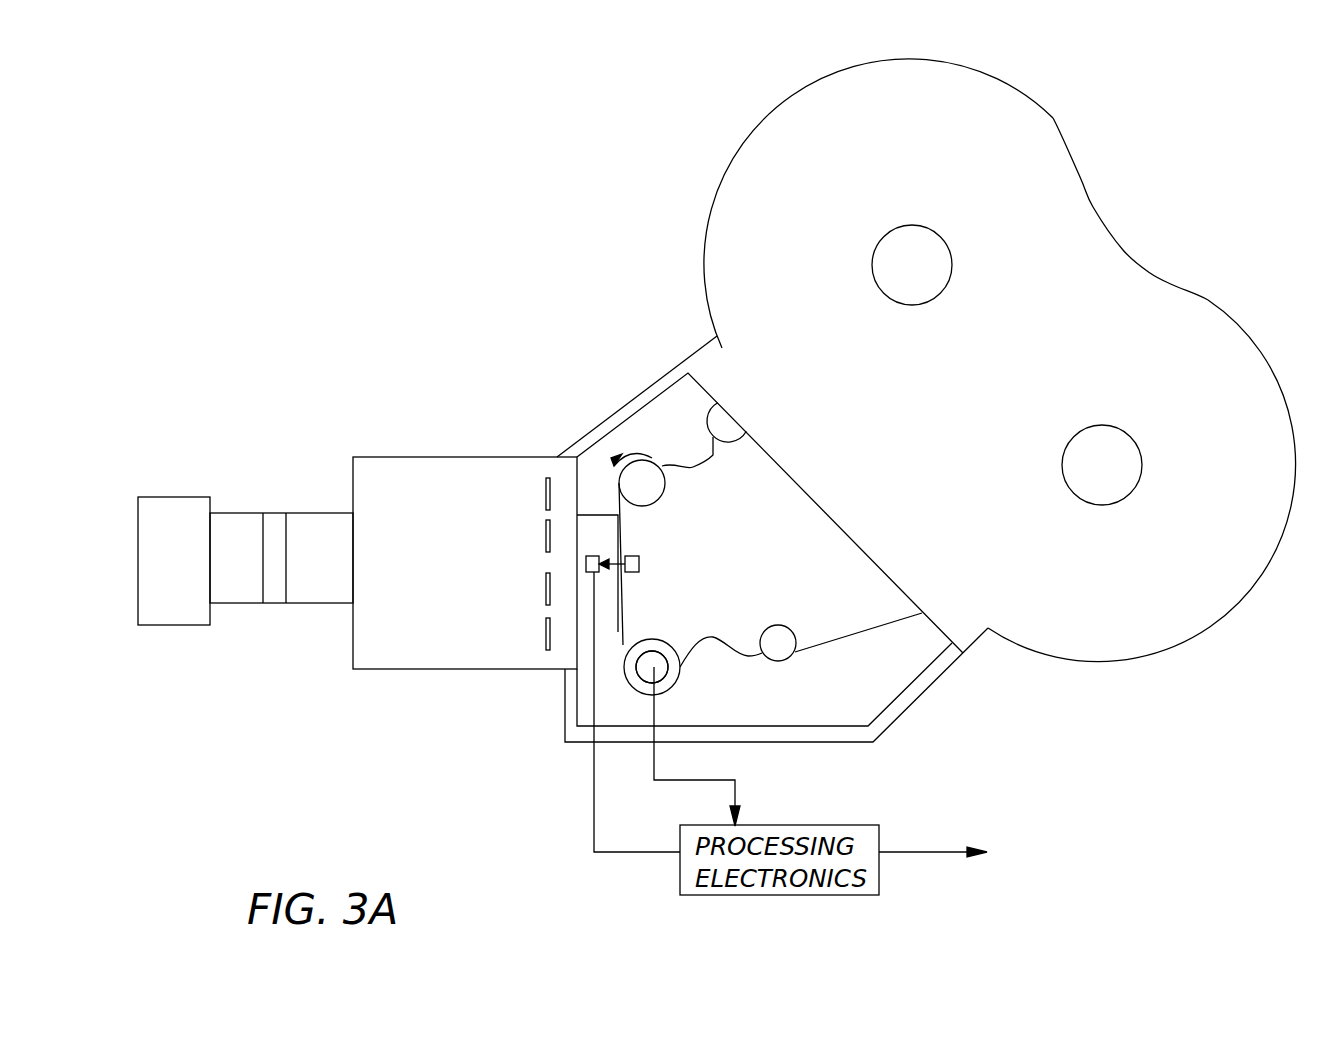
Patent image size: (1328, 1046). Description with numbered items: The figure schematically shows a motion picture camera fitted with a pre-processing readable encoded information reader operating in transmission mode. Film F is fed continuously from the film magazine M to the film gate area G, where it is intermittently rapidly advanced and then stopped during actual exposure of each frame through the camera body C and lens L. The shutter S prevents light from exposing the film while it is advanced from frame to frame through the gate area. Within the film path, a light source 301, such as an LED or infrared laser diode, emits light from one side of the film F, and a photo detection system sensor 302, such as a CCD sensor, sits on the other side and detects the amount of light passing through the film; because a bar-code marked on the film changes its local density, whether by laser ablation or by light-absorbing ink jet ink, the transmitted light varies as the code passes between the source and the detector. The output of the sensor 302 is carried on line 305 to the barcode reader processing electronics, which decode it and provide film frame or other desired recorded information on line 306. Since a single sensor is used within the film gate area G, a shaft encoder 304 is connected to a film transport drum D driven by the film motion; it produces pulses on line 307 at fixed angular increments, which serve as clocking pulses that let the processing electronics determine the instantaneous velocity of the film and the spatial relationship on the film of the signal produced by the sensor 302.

The light source 301 is at (640, 562).
The photo detection system sensor 302 is at (587, 575).
The shaft encoder 304 is at (664, 679).
The line 305 is at (585, 808).
The line 306 is at (947, 853).
The line 307 is at (735, 780).
The film magazine M is at (1095, 664).
The camera body C is at (400, 670).
The lens L is at (242, 603).
The shutter S is at (546, 503).
The film gate area G is at (598, 538).
The film F is at (714, 455).
The film transport drum D is at (652, 640).